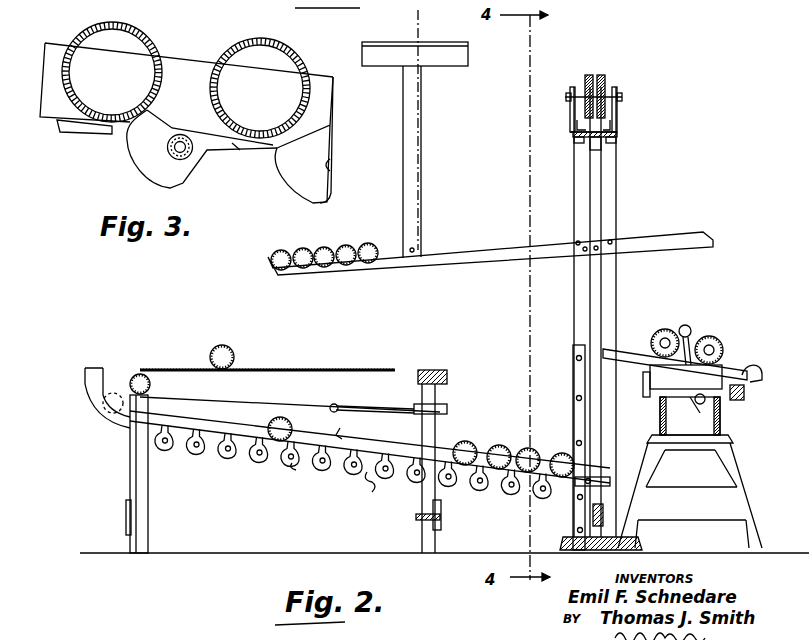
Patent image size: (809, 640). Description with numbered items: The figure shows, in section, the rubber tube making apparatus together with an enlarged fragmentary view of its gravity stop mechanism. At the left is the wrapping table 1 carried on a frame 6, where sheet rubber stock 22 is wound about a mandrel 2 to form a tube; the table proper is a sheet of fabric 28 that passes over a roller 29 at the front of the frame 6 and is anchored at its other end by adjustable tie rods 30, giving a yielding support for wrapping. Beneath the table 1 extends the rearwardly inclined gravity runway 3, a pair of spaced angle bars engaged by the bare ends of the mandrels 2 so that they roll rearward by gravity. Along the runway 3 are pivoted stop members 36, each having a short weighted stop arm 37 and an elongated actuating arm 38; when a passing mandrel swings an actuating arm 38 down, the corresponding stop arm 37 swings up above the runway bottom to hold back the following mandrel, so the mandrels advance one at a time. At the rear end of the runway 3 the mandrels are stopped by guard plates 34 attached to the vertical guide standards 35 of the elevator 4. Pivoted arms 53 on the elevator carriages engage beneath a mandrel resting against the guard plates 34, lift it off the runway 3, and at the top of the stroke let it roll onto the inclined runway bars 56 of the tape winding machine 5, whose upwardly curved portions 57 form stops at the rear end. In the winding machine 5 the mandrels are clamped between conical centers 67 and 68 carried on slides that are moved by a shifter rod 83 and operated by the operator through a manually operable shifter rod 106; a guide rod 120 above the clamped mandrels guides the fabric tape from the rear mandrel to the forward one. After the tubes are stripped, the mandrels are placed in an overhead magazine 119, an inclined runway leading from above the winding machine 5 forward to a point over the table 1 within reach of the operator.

In FIG. 2, the wrapping table 1 is at (447, 376).
In FIG. 3, the mandrel 2 is at (70, 42).
In FIG. 2, the mandrel 2 is at (292, 254).
In FIG. 3, the gravity runway 3 is at (187, 68).
In FIG. 2, the gravity runway 3 is at (302, 462).
In FIG. 2, the elevator 4 is at (603, 215).
In FIG. 2, the tape winding machine 5 is at (735, 440).
In FIG. 2, the frame 6 is at (128, 477).
In FIG. 2, the sheet rubber stock 22 is at (285, 368).
In FIG. 2, the sheet of fabric 28 is at (257, 403).
In FIG. 2, the roller 29 is at (152, 384).
In FIG. 2, the tie rods 30 is at (362, 406).
In FIG. 2, the guard plates 34 is at (574, 398).
In FIG. 2, the guide standards 35 is at (585, 303).
In FIG. 3, the pivoted stop members 36 is at (190, 178).
In FIG. 2, the pivoted stop members 36 is at (376, 482).
In FIG. 3, the weighted stop arm 37 is at (135, 165).
In FIG. 2, the weighted stop arm 37 is at (226, 460).
In FIG. 3, the actuating arm 38 is at (76, 144).
In FIG. 2, the actuating arm 38 is at (340, 450).
In FIG. 2, the forwardly extending arm 53 is at (572, 488).
In FIG. 2, the inclined runway bars 56 is at (742, 370).
In FIG. 2, the upwardly curved portions 57 is at (762, 372).
In FIG. 2, the conical center 67 is at (664, 328).
In FIG. 2, the conical center 68 is at (710, 335).
In FIG. 2, the shifter rod 83 is at (698, 405).
In FIG. 2, the manually operable shifter rod 106 is at (745, 396).
In FIG. 2, the overhead magazine 119 is at (468, 244).
In FIG. 2, the guide rod 120 is at (687, 325).